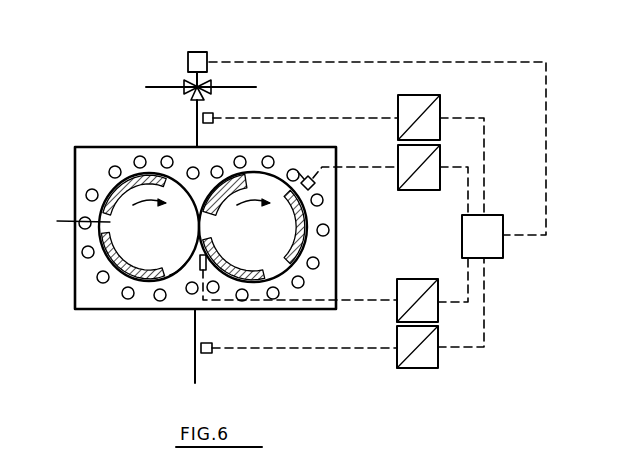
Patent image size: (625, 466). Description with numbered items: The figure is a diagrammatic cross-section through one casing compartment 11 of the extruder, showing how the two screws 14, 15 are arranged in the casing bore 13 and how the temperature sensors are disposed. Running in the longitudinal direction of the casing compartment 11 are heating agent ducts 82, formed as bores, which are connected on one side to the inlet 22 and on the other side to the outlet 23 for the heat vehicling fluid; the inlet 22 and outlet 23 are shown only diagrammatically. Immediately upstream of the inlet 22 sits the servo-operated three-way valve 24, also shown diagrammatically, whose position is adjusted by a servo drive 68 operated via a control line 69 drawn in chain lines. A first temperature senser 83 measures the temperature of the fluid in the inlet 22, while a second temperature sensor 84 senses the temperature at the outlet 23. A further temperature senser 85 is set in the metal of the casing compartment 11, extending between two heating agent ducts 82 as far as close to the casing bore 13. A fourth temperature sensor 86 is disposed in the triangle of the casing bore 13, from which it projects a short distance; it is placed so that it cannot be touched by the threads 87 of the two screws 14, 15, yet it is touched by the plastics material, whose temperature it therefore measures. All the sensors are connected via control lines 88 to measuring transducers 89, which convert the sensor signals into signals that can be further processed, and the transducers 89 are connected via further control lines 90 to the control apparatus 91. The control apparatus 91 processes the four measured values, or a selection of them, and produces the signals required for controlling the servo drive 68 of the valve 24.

The casing compartment 11 is at (93, 152).
The casing bore 13 is at (180, 270).
The screw 14 is at (265, 240).
The screw 15 is at (164, 238).
The inlet 22 is at (195, 141).
The outlet 23 is at (197, 328).
The three-way valve 24 is at (196, 85).
The servo drive 68 is at (205, 55).
The control line 69 is at (428, 62).
The heating agent duct 82 is at (86, 194).
The first temperature senser 83 is at (213, 114).
The second temperature sensor 84 is at (207, 354).
The further temperature senser 85 is at (306, 177).
The fourth temperature sensor 86 is at (208, 263).
The threads 87 is at (74, 221).
The control lines 88 is at (362, 121).
The measuring transducer 89 is at (438, 108).
The further control lines 90 is at (482, 131).
The control apparatus 91 is at (492, 246).